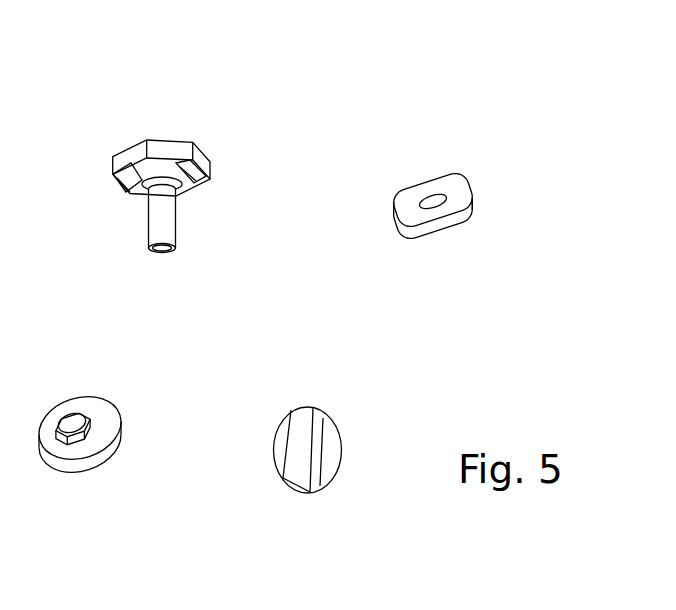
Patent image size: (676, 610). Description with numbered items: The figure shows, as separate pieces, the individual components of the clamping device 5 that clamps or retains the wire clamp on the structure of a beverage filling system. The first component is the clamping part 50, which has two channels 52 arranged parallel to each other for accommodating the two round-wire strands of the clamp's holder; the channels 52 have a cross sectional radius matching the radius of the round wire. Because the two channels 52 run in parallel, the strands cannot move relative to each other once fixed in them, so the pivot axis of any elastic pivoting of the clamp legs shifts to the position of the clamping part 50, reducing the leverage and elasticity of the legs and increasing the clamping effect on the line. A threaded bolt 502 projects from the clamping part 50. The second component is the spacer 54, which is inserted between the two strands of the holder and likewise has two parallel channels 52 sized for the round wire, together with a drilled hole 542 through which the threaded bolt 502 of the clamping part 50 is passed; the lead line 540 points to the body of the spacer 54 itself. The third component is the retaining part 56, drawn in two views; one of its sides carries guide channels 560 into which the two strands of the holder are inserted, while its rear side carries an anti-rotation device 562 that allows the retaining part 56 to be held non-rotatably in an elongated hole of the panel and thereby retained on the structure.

The clamping device 5 is at (169, 91).
The clamping part 50 is at (204, 153).
The threaded bolt 502 is at (163, 225).
The channels 52 is at (137, 187).
The spacer 54 is at (423, 215).
The plate edge 540 is at (473, 200).
The drilled hole 542 is at (430, 200).
The retaining part 56 is at (122, 425).
The guide channels 560 is at (322, 432).
The anti-rotation device 562 is at (88, 412).